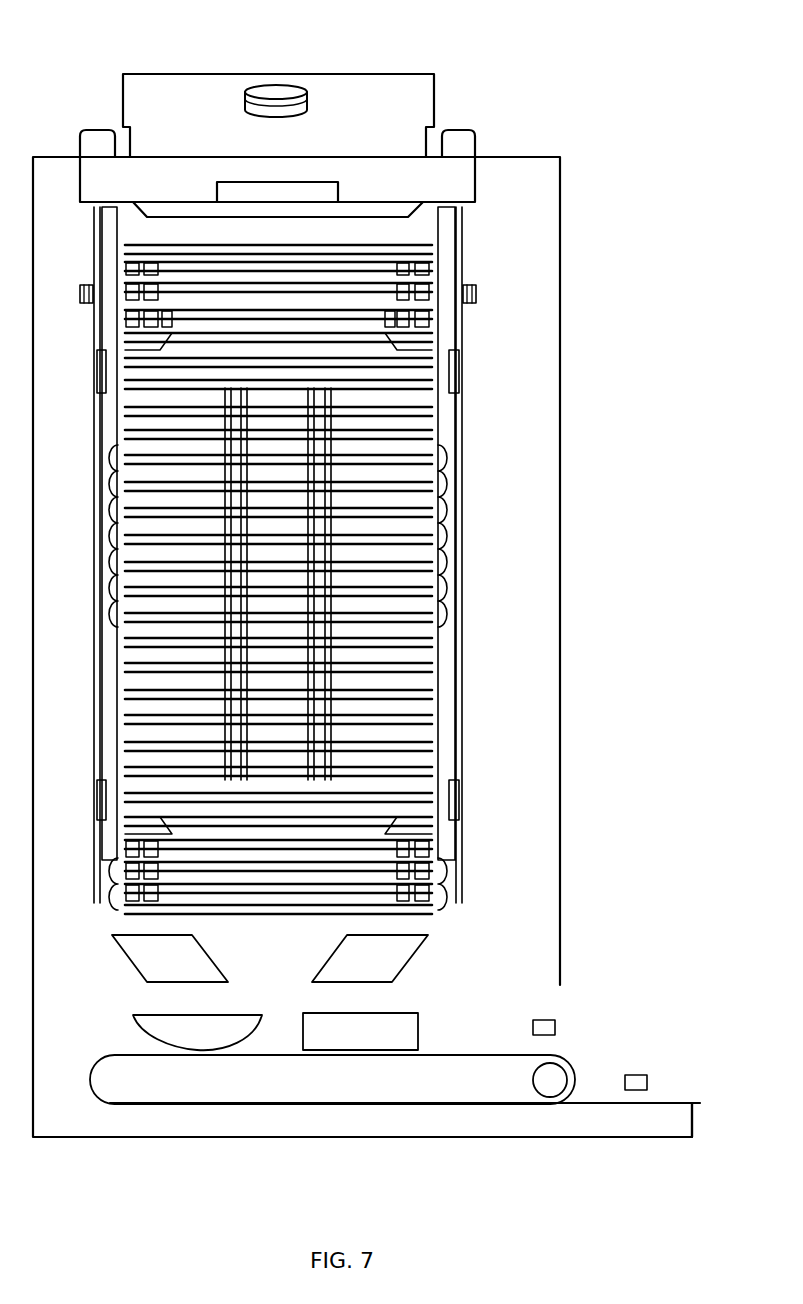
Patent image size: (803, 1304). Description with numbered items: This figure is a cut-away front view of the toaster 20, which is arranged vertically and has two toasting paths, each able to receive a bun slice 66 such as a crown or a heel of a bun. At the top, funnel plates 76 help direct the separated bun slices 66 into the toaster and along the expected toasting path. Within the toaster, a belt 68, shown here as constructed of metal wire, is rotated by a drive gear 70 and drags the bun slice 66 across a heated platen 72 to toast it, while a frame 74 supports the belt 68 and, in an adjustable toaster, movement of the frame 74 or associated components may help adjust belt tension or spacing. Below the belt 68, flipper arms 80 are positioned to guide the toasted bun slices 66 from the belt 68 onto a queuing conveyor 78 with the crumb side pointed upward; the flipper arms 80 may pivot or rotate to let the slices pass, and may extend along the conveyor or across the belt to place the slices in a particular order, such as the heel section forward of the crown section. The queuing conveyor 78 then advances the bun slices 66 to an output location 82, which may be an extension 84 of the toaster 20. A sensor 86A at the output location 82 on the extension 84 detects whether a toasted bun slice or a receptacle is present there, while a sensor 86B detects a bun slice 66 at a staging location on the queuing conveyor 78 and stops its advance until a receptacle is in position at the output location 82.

The toaster 20 is at (622, 107).
The funnel plates 76 is at (404, 86).
The belt 68 is at (405, 270).
The drive gear 70 is at (477, 295).
The heated platen 72 is at (190, 368).
The frame 74 is at (447, 418).
The flipper arms 80 is at (133, 953).
The bun slice 66 is at (136, 1018).
The queuing conveyor 78 is at (217, 1090).
The sensor 86A is at (645, 1073).
The sensor 86B is at (556, 1025).
The output location 82 is at (677, 1102).
The extension 84 is at (675, 1138).